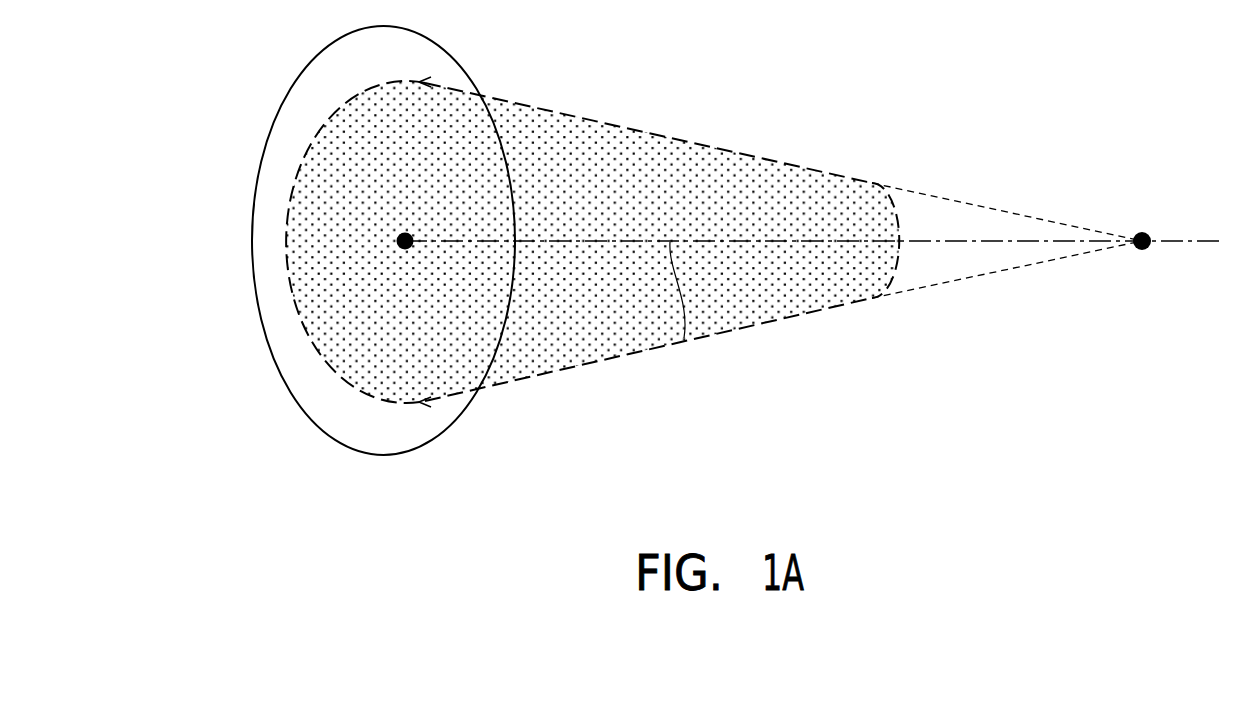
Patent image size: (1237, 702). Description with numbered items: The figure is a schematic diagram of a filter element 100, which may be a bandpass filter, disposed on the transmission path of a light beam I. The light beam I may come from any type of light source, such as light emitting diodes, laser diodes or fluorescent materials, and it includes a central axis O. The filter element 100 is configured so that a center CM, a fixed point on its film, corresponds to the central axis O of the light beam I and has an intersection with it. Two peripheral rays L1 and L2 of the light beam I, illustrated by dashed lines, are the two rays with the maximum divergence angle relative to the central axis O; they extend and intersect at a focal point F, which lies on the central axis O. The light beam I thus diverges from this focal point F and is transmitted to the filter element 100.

The filter element 100 is at (252, 239).
The center CM is at (400, 234).
The focal point F is at (1142, 232).
The light beam I is at (651, 170).
The peripheral ray L1 is at (772, 160).
The peripheral ray L2 is at (794, 317).
The central axis O is at (684, 338).